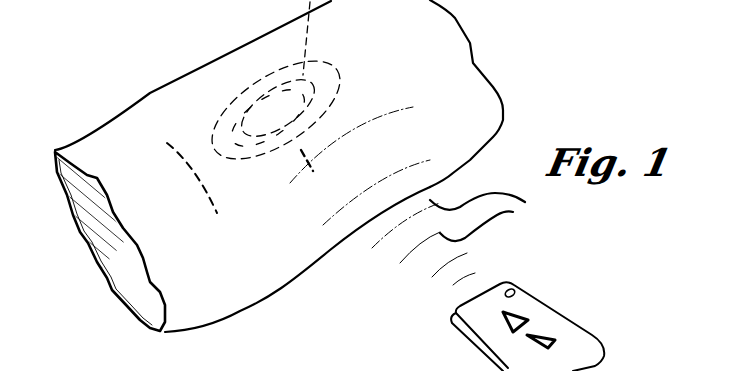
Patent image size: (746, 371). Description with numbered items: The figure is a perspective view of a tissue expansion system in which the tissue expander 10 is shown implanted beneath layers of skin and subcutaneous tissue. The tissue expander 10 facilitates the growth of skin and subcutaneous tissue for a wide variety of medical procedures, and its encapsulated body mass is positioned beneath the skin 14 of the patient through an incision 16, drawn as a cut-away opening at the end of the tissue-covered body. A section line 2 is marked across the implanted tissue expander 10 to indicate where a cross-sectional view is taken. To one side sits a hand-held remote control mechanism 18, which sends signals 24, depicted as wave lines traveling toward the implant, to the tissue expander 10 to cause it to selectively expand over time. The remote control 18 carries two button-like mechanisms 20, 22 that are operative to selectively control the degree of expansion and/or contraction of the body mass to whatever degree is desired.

The section line 2- 2 is at (238, 15).
The tissue expander 10 is at (345, 66).
The skin 14 is at (118, 128).
The incision 16 is at (197, 156).
The remote control mechanism 18 is at (573, 337).
The mechanism 20 is at (547, 330).
The mechanism 22 is at (521, 313).
The signals 24 is at (480, 238).